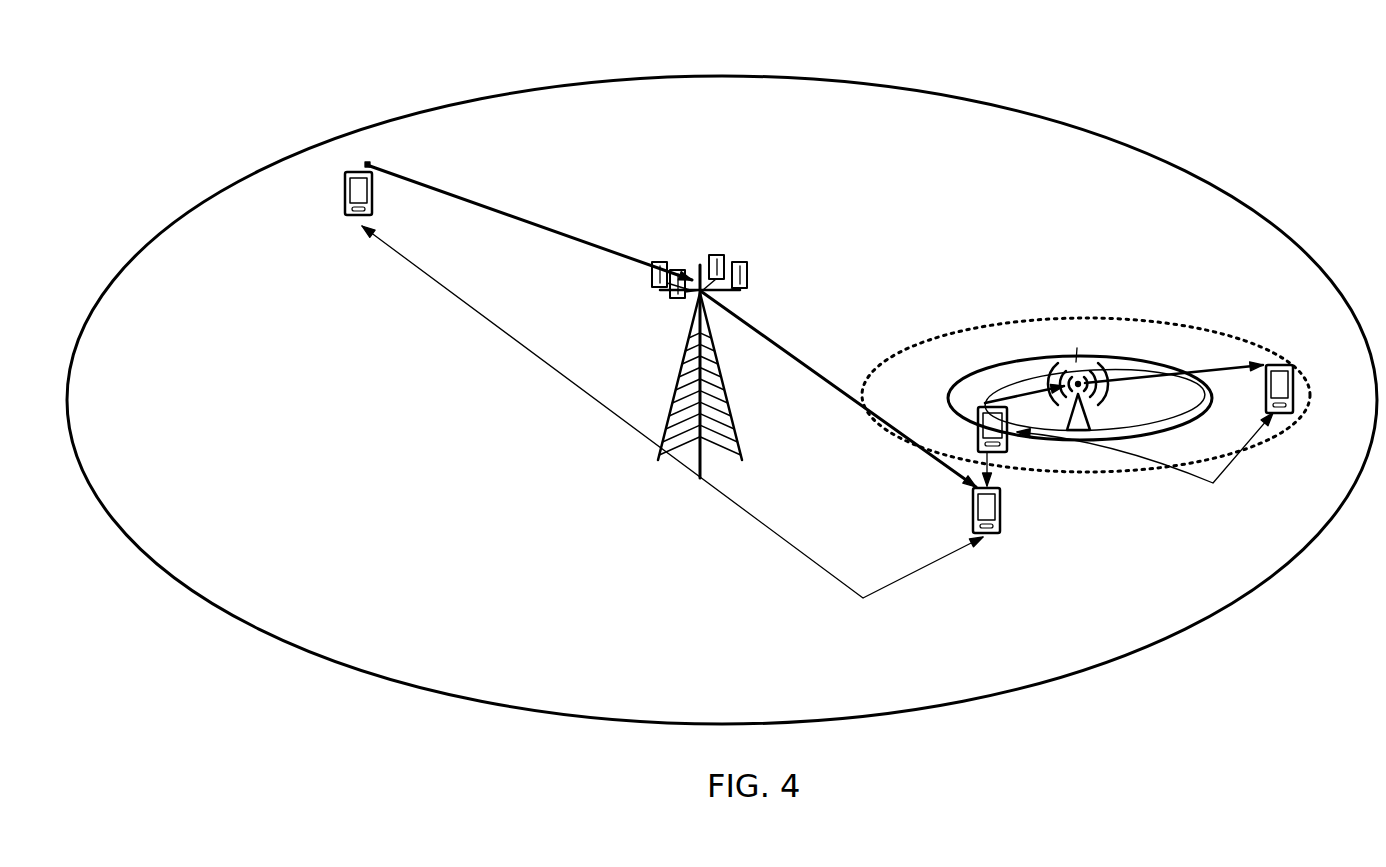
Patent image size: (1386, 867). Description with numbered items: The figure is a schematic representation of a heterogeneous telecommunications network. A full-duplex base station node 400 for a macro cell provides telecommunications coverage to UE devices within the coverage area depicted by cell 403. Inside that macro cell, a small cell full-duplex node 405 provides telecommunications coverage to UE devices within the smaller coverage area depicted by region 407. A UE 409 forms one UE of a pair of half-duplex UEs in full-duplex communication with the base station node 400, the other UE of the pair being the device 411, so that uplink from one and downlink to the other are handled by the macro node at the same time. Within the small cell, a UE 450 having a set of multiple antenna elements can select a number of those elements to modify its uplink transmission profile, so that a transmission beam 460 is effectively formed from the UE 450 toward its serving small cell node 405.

The cell 403 is at (718, 76).
The base station node 400 is at (697, 252).
The device 411 is at (350, 217).
The UE 409 is at (993, 535).
The coverage area 407 is at (917, 342).
The small cell full-duplex node 405 is at (1130, 313).
The beam 460 is at (997, 404).
The UE 450 is at (980, 430).